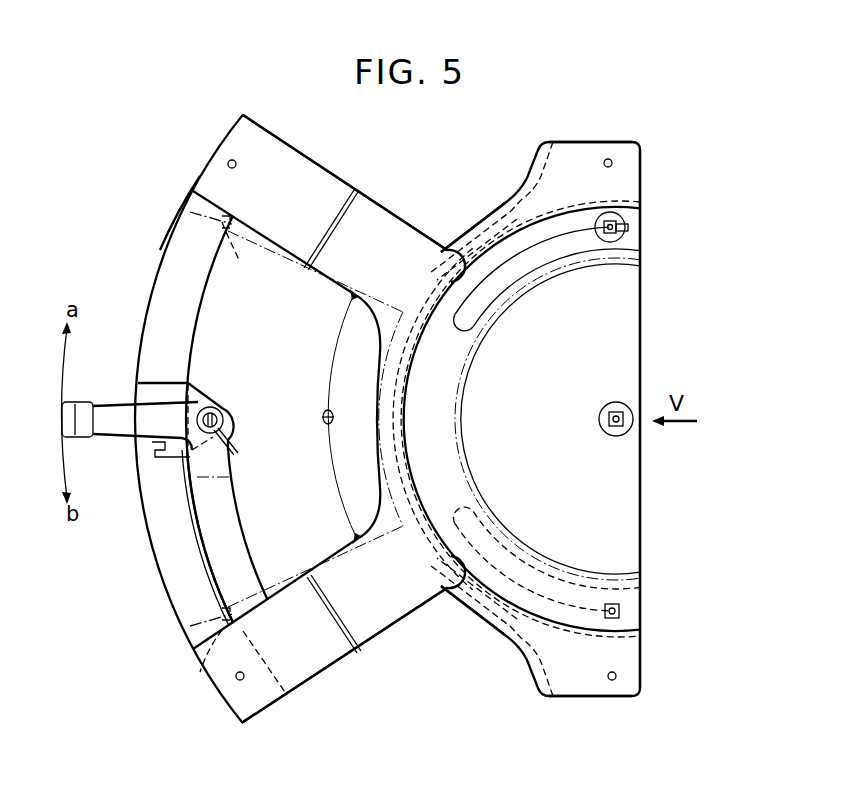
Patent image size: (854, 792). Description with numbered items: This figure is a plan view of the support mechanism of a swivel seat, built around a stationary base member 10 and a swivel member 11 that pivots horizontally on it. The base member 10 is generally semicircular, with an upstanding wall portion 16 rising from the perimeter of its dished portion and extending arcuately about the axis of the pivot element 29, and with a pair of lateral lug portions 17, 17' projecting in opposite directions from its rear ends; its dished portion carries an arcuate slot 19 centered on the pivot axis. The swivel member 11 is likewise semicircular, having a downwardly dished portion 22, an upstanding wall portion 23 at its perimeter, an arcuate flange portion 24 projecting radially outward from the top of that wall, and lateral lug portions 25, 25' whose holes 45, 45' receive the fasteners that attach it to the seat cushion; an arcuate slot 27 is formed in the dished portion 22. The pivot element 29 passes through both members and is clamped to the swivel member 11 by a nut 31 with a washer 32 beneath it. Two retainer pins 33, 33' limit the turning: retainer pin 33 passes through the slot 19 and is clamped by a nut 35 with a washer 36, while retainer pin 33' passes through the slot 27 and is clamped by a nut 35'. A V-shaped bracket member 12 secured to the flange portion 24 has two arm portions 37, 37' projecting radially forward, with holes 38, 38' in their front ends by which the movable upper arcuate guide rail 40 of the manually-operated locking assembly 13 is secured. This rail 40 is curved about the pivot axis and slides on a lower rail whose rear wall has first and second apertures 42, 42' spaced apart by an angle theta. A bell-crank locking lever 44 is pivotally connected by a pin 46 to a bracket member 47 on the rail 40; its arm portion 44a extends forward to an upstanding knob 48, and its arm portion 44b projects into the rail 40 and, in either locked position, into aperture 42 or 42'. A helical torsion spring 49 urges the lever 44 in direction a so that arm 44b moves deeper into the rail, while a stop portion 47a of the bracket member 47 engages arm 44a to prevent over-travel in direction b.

The stationary base member 10 is at (462, 243).
The swivel member 11 is at (644, 541).
The bracket member 12 is at (372, 197).
The manually-operated locking assembly 13 is at (158, 579).
The upstanding wall portion 16 is at (466, 592).
The lateral lug portion 17 is at (491, 645).
The lateral lug portion 17' is at (495, 194).
The arcuate slot 19 is at (503, 551).
The downwardly dished portion 22 is at (632, 340).
The upstanding wall portion 23 is at (525, 622).
The arcuate flange portion 24 is at (494, 210).
The lateral lug portion 25 is at (590, 714).
The lateral lug portion 25' is at (590, 124).
The arcuate slot 27 is at (507, 250).
The pivot element 29 is at (614, 404).
The nut 31 is at (602, 425).
The washer 32 is at (618, 437).
The retainer pin 33 is at (620, 583).
The retainer pin 33' is at (641, 214).
The nut 35 is at (644, 620).
The nut 35' is at (648, 238).
The washer 36 is at (608, 243).
The arm portion 37 is at (345, 655).
The arm portion 37' is at (345, 182).
The hole 38 is at (256, 692).
The hole 38' is at (248, 184).
The movable upper arcuate guide rail 40 is at (165, 263).
The first aperture 42 is at (233, 653).
The second aperture 42' is at (221, 244).
The locking lever 44 is at (233, 407).
The arm portion 44a is at (117, 405).
The arm portion 44b is at (246, 530).
The hole 45 is at (619, 702).
The hole 45' is at (587, 175).
The pin 46 is at (207, 409).
The bracket member 47 is at (158, 383).
The stop portion 47a is at (160, 458).
The upstanding knob 48 is at (78, 437).
The helical torsion spring 49 is at (224, 432).